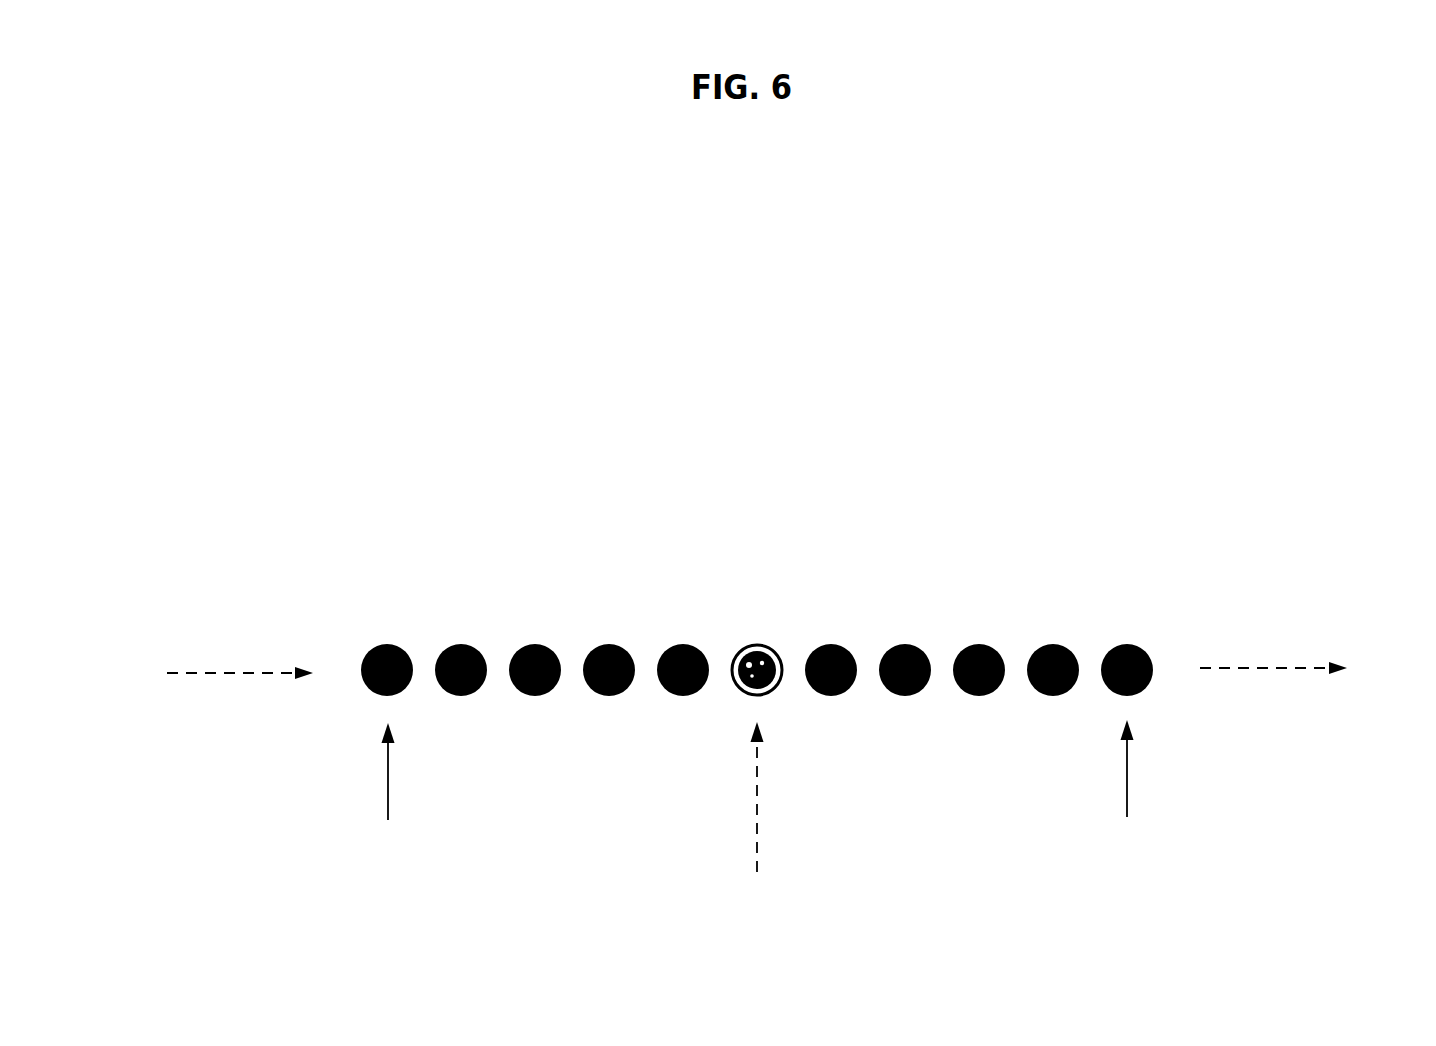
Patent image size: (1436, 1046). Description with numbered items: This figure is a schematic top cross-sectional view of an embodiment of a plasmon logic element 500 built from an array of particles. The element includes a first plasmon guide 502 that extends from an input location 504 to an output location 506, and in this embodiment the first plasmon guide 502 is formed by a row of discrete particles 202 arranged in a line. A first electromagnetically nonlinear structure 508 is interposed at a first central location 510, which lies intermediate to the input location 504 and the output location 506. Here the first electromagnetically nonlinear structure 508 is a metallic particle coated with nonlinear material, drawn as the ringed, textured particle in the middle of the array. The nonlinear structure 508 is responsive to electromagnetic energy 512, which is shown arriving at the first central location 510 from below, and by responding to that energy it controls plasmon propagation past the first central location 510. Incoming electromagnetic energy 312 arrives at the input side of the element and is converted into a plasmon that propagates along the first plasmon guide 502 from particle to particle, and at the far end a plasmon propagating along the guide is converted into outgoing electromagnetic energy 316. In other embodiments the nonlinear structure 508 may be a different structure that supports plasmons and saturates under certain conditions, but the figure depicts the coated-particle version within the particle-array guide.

The plasmon logic element 500 is at (798, 633).
The first plasmon guide 502 is at (607, 644).
The first electromagnetically nonlinear structure 508 is at (862, 612).
The first central location 510 is at (757, 643).
The particles 202 is at (461, 696).
The input location 504 is at (387, 800).
The output location 506 is at (1127, 797).
The electromagnetic energy 512 is at (757, 820).
The incoming electromagnetic energy 312 is at (203, 673).
The outgoing electromagnetic energy 316 is at (1311, 672).